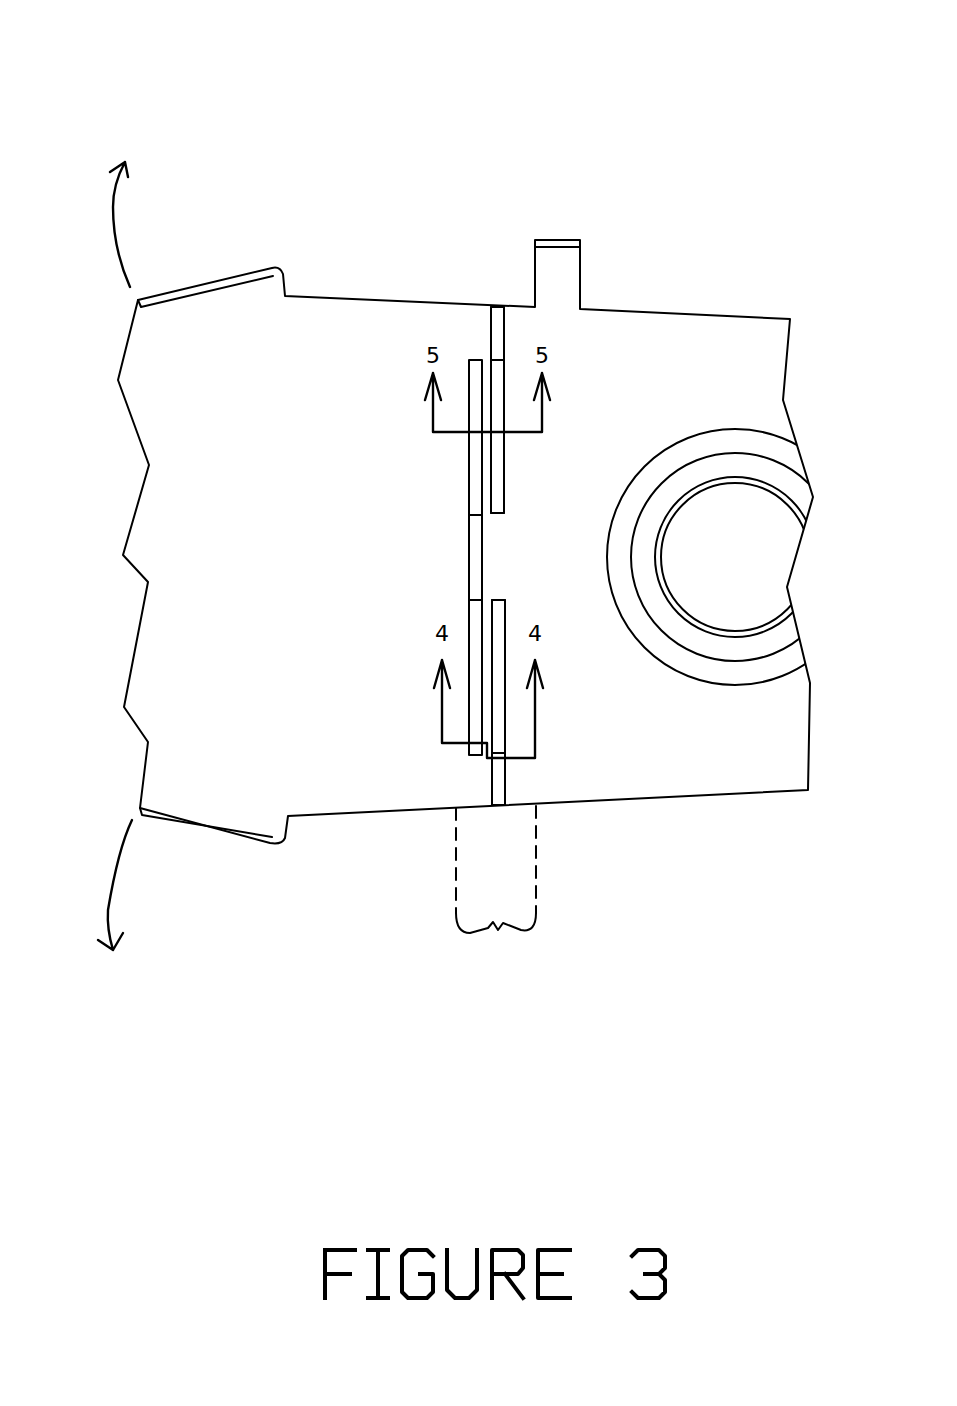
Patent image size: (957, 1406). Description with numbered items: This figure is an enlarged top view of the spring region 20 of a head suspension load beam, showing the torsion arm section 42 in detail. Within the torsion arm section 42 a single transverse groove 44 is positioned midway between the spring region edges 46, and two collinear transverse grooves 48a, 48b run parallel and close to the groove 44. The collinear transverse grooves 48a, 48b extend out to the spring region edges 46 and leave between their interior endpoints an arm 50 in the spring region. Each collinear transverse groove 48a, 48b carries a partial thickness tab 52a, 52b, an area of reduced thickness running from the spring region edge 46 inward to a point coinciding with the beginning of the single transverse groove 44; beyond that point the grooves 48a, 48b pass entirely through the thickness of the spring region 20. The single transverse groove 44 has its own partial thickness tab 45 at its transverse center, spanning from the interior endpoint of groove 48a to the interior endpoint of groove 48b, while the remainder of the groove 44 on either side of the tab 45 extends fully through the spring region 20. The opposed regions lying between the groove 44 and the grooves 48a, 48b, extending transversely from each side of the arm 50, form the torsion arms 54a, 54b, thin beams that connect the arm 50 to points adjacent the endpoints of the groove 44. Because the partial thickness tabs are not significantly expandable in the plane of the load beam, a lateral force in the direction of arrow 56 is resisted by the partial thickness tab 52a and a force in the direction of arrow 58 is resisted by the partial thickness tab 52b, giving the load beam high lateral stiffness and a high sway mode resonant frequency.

The spring region 20 is at (498, 548).
The torsion arm section 42 is at (496, 887).
The single transverse groove 44 is at (477, 495).
The partial thickness tab 45 is at (472, 565).
The spring region edges 46 is at (340, 297).
The collinear transverse groove 48a is at (497, 307).
The collinear transverse groove 48b is at (498, 805).
The arm 50 is at (498, 555).
The partial thickness tab 52a is at (498, 333).
The partial thickness tab 52b is at (500, 787).
The torsion arm 54a is at (487, 492).
The torsion arm 54b is at (487, 623).
The arrow 56 is at (132, 885).
The arrow 58 is at (140, 224).